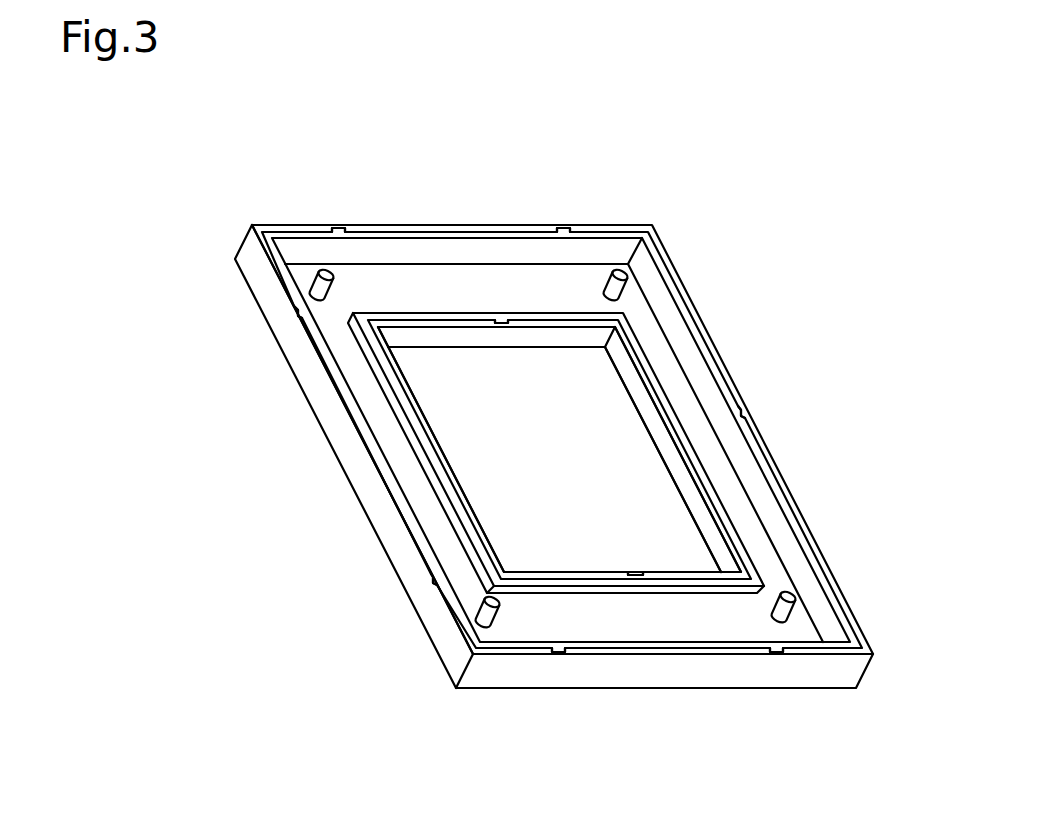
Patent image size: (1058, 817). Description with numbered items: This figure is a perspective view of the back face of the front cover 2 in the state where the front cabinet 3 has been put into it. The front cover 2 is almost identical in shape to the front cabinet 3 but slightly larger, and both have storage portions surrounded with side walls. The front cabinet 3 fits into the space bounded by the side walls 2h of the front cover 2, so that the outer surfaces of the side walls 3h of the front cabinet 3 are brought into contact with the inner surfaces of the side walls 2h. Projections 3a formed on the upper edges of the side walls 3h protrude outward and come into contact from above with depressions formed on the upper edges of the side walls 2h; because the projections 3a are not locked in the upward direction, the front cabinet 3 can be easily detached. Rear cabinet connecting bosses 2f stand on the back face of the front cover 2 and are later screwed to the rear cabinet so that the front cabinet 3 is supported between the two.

The front cover 2 is at (252, 225).
The front cabinet 3 is at (272, 238).
The projections 3a is at (340, 230).
The rear cabinet connecting bosses 2f is at (318, 274).
The side walls 2h is at (641, 403).
The side walls 3h is at (645, 352).